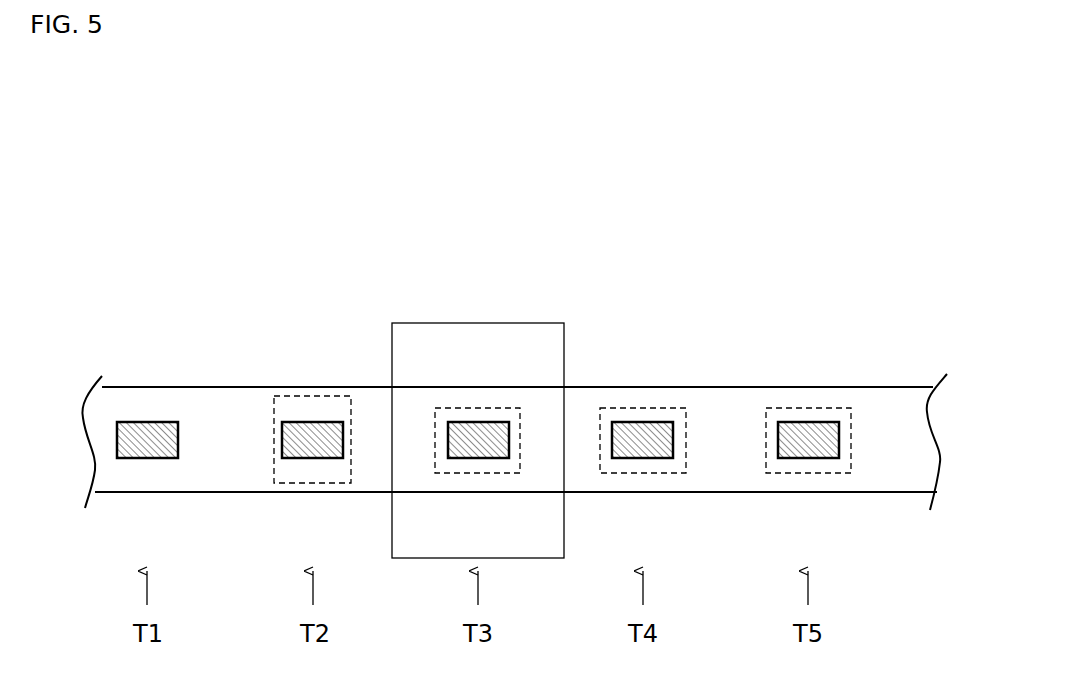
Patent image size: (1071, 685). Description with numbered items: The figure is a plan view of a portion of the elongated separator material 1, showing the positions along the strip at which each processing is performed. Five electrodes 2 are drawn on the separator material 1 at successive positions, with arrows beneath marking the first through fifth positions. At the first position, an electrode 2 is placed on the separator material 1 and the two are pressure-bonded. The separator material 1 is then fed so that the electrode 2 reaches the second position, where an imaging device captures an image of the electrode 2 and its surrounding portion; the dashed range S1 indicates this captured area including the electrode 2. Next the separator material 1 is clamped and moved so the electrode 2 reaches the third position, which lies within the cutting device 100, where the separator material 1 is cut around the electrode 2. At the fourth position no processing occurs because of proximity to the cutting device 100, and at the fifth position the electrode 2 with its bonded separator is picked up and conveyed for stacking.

The separator material 1 is at (728, 386).
The electrode 2 is at (150, 421).
The range S1 is at (312, 395).
The cutting device 100 is at (468, 321).